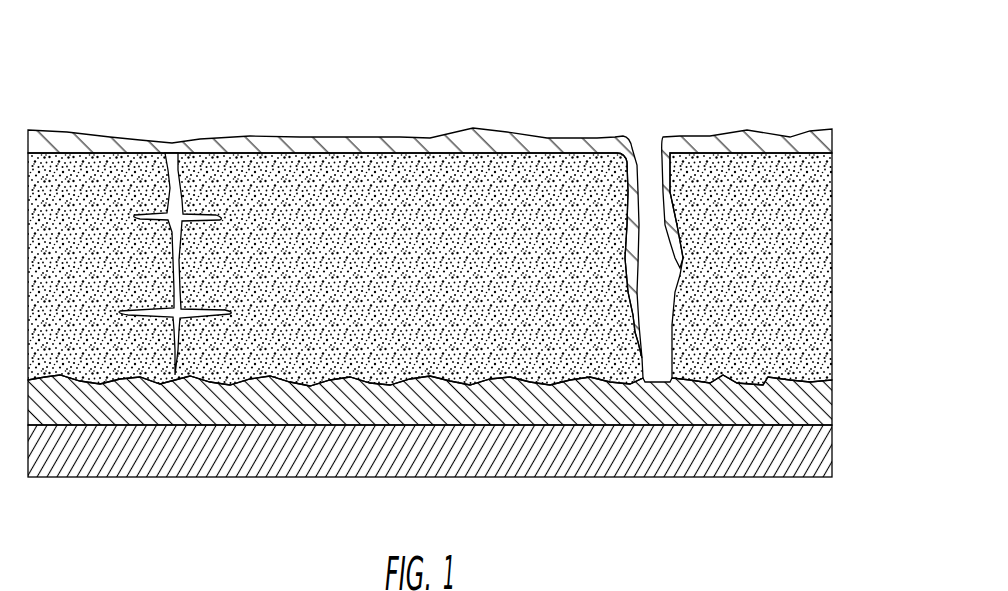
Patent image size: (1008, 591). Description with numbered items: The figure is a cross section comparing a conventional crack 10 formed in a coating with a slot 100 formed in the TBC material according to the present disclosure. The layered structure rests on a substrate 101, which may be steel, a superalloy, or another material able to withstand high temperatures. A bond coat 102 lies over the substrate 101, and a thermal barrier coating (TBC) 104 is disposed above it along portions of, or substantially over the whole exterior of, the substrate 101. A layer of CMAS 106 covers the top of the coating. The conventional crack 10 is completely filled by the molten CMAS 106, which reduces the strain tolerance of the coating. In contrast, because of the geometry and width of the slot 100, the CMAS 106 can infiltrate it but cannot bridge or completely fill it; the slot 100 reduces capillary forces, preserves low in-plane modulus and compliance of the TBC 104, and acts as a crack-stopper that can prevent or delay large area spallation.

The conventional crack 10 is at (170, 143).
The slot 100 is at (643, 137).
The substrate 101 is at (815, 462).
The bond coat 102 is at (818, 398).
The thermal barrier coating (TBC) 104 is at (807, 258).
The layer of CMAS 106 is at (393, 148).